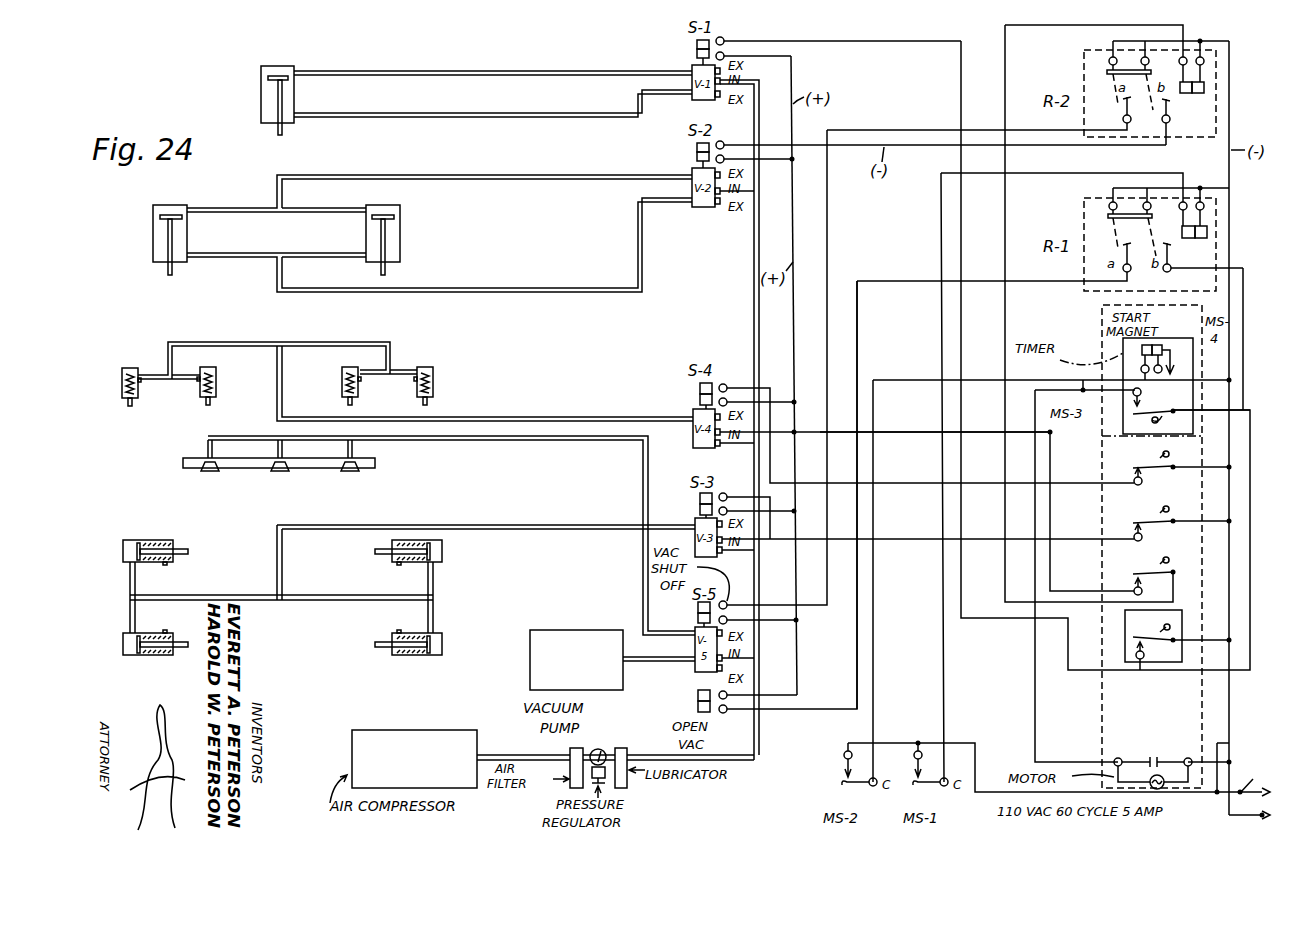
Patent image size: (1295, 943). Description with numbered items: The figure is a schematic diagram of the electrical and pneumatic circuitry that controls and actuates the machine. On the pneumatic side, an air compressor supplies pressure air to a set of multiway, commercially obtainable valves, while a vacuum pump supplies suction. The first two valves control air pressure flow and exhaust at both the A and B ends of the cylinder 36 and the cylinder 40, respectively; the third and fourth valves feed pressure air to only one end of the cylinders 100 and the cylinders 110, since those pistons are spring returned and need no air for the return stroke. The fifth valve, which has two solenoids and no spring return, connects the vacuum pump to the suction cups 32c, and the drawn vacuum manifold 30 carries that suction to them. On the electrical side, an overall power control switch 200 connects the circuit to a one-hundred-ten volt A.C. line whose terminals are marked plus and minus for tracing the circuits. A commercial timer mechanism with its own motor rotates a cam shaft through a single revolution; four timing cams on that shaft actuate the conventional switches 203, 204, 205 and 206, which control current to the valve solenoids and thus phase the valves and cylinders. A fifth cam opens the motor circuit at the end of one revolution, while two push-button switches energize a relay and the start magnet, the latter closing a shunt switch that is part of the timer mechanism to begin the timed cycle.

The power pneumatic cylinder 36 is at (268, 105).
The power pneumatic cylinder 40 is at (158, 245).
The power pneumatic cylinder 110 is at (218, 381).
The vacuum manifold 30 is at (423, 535).
The suction cups 32c is at (255, 483).
The power pneumatic cylinder 100 is at (131, 540).
The overall power control switch 200 is at (1246, 783).
The switch 203 is at (1133, 637).
The switch 204 is at (1133, 574).
The switch 205 is at (1133, 522).
The switch 206 is at (1133, 467).